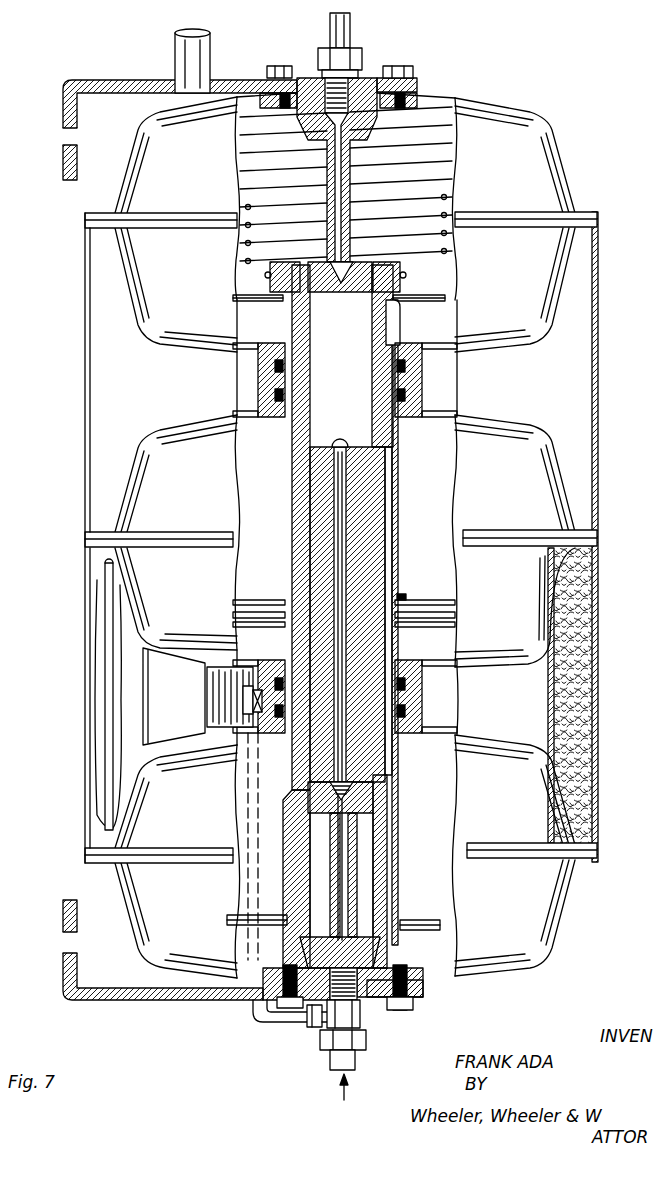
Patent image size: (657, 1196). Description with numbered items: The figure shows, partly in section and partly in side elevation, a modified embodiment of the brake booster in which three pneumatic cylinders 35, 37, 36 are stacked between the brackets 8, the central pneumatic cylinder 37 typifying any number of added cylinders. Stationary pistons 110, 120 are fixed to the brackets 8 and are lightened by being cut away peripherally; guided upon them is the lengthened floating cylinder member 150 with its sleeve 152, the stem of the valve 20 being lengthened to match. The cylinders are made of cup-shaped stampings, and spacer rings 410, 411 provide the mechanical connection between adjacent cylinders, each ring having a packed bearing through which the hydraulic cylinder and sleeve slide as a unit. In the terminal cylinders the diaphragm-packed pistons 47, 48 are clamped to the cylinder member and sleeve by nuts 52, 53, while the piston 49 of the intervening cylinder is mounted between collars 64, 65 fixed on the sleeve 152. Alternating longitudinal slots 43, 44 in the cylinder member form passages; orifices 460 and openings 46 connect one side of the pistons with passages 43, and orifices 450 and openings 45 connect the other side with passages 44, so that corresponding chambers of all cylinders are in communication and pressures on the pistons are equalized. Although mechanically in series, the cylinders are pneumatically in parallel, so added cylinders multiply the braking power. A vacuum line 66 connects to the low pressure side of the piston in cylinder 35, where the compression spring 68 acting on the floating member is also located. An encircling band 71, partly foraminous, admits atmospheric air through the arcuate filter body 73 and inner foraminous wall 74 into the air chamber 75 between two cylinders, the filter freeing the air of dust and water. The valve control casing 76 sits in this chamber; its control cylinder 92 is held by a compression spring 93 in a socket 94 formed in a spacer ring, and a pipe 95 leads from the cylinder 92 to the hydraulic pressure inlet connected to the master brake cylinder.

The bracket 8 is at (111, 80).
The vacuum line 66 is at (200, 58).
The pneumatic cylinder 35 is at (540, 168).
The compression spring 68 is at (458, 198).
The stationary piston 110 is at (353, 275).
The nut 52 is at (415, 263).
The diaphragm-packed piston 47 is at (440, 298).
The opening 45 is at (402, 331).
The spacer ring 411 is at (422, 382).
The central pneumatic cylinder 37 is at (530, 440).
The valve 20 is at (340, 438).
The floating cylinder member 150 is at (383, 465).
The sleeve 152 is at (397, 487).
The slot 43 is at (292, 510).
The slot 44 is at (394, 537).
The band 71 is at (598, 490).
The orifice 460 is at (287, 600).
The collar 64 is at (402, 596).
The diaphragm-packed piston 49 is at (440, 600).
The collar 65 is at (405, 630).
The orifice 450 is at (400, 648).
The spacer ring 410 is at (422, 698).
The air chamber 75 is at (484, 701).
The inner foraminous wall 74 is at (578, 682).
The arcuate filter body 73 is at (598, 708).
The cylinder 92 is at (222, 697).
The valve control casing 76 is at (150, 707).
The compression spring 93 is at (240, 727).
The socket 94 is at (263, 733).
The pipe 95 is at (248, 800).
The stationary piston 120 is at (365, 832).
The opening 46 is at (290, 896).
The diaphragm-packed piston 48 is at (440, 905).
The nut 53 is at (410, 948).
The pneumatic cylinder 36 is at (548, 910).